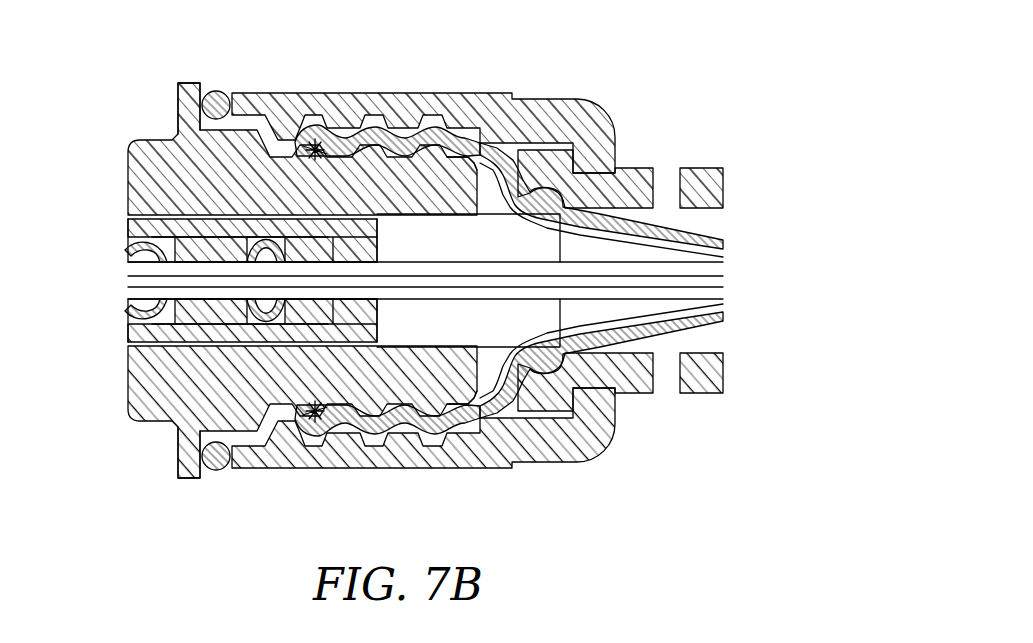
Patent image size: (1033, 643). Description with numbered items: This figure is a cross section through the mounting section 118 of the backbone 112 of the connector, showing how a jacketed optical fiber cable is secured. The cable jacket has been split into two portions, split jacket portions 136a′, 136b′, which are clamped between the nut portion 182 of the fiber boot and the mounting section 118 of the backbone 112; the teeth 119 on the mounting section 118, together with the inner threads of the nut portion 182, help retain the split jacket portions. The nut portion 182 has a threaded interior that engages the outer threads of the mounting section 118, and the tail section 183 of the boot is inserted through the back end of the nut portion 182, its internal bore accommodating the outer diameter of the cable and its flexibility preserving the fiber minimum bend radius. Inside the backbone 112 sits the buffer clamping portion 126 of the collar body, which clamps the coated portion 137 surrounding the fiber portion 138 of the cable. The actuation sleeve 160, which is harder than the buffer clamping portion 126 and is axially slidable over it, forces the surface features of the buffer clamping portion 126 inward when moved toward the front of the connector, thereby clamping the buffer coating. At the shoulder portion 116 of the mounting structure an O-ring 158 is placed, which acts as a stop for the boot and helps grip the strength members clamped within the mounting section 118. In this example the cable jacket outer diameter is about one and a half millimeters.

The backbone 112 is at (142, 140).
The shoulder portion 116 is at (188, 82).
The mounting section 118 is at (315, 150).
The teeth 119 is at (390, 132).
The buffer clamping portion 126 is at (153, 237).
The split jacket portion 136a′ is at (503, 400).
The split jacket portion 136b′ is at (481, 142).
The coated portion 137 is at (270, 295).
The fiber portion 138 is at (337, 282).
The O-ring 158 is at (212, 100).
The actuation sleeve 160 is at (437, 403).
The nut portion 182 is at (467, 93).
The tail section 183 is at (640, 177).